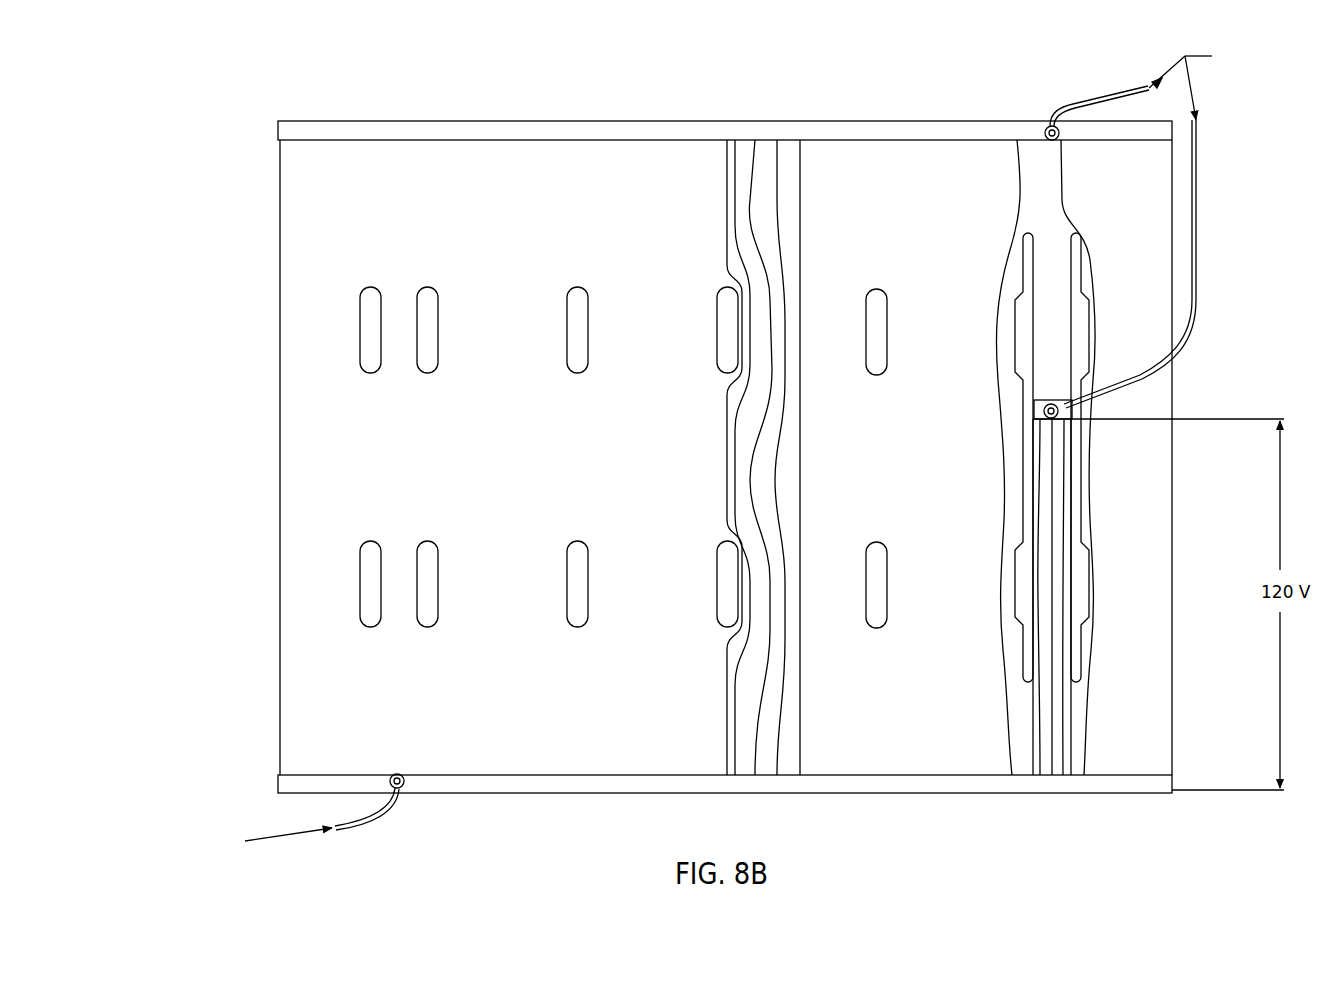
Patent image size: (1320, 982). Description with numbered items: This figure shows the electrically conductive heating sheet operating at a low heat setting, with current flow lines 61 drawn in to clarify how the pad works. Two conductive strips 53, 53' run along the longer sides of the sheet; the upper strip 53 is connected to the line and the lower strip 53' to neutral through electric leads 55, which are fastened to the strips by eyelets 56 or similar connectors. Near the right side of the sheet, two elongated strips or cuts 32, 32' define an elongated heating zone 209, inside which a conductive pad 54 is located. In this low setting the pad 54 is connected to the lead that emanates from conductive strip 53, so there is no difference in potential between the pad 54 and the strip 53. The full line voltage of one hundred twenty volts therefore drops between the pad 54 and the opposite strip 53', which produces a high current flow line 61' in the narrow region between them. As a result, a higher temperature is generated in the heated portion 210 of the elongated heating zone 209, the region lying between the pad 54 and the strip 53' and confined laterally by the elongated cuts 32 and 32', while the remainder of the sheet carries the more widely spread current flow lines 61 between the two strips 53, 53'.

The conductive strip 53 is at (725, 95).
The conductive strip 53' is at (725, 813).
The electric lead 55 is at (1094, 100).
The current flow line 61 is at (875, 411).
The elongated heating zone 209 is at (1055, 280).
The eyelet 56 is at (1055, 402).
The conductive pad 54 is at (1068, 410).
The heated portion 210 is at (1069, 497).
The elongated strip 32' is at (998, 544).
The high current flow line 61' is at (1068, 638).
The elongated strip 32 is at (1119, 542).